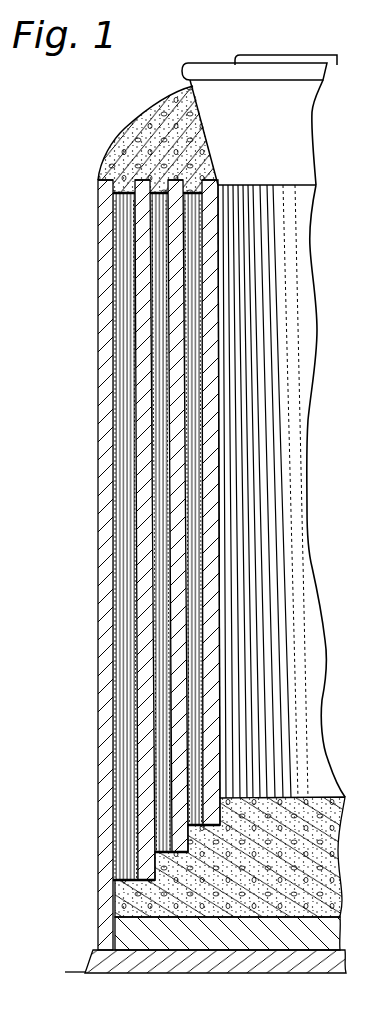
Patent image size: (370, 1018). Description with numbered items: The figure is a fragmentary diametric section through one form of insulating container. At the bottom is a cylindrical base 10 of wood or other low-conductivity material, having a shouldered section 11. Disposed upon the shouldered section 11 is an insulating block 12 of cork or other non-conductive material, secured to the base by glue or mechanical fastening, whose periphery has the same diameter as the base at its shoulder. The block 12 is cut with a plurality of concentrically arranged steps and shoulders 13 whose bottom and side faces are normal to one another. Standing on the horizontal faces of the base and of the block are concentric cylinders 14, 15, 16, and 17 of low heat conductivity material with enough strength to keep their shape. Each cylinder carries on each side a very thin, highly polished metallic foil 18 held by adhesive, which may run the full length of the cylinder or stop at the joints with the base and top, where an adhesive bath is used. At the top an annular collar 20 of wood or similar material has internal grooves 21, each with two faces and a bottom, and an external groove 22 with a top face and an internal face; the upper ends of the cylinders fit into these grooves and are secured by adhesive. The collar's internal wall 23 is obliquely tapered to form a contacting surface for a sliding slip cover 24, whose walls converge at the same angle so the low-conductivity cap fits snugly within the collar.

The base 10 is at (207, 962).
The shouldered section 11 is at (123, 932).
The insulating block 12 is at (338, 863).
The steps and shoulders 13 is at (117, 882).
The cylinder 14 is at (112, 790).
The cylinder 15 is at (143, 757).
The cylinder 16 is at (178, 735).
The cylinder 17 is at (213, 712).
The metallic foil 18 is at (117, 602).
The annular collar 20 is at (147, 113).
The internal grooves 21 is at (137, 184).
The external groove 22 is at (158, 200).
The internal wall 23 is at (173, 89).
The slip cover 24 is at (214, 90).